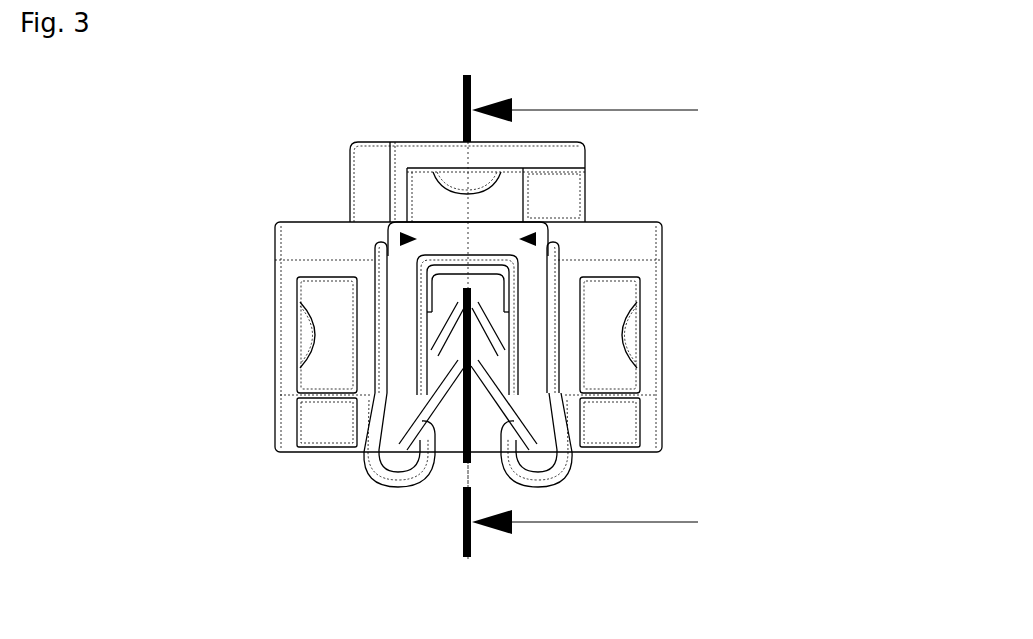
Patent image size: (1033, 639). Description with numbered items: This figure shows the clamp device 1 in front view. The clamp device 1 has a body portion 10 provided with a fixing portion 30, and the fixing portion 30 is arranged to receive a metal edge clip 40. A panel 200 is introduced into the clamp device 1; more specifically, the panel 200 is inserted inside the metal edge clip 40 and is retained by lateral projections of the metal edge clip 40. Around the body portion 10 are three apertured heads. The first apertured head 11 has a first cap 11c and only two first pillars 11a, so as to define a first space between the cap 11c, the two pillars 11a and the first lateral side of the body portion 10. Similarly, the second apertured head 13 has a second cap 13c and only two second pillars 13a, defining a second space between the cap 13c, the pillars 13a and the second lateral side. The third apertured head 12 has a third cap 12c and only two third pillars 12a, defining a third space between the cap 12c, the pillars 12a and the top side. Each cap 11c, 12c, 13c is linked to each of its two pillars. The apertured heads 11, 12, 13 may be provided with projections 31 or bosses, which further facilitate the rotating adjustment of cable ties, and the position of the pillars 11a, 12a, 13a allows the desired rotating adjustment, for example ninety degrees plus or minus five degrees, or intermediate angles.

The clamp device 1 is at (280, 101).
The body portion 10 is at (363, 436).
The first apertured head 11 is at (232, 363).
The first pillars 11a is at (310, 242).
The first cap 11c is at (285, 297).
The third apertured head 12 is at (433, 133).
The third pillars 12a is at (365, 198).
The third cap 12c is at (437, 157).
The second apertured head 13 is at (686, 372).
The second pillars 13a is at (615, 233).
The second cap 13c is at (648, 297).
The fixing portion 30 is at (372, 478).
The projections 31 is at (407, 175).
The metal edge clip 40 is at (541, 451).
The panel 200 is at (466, 436).